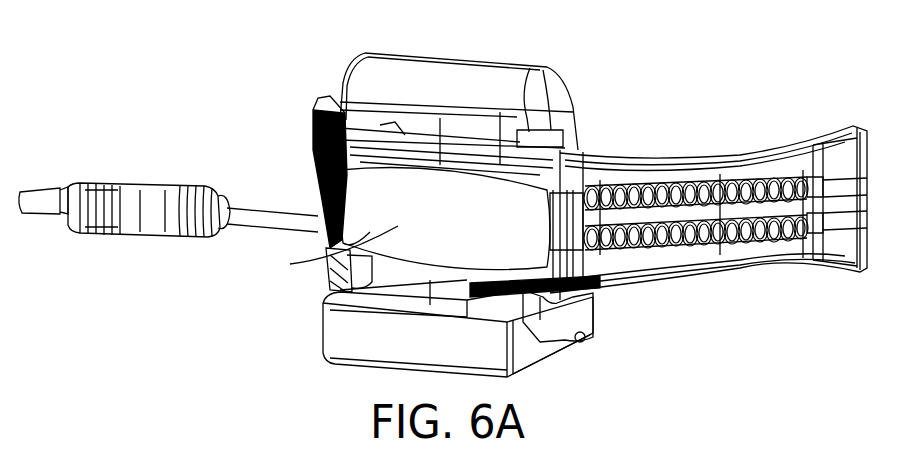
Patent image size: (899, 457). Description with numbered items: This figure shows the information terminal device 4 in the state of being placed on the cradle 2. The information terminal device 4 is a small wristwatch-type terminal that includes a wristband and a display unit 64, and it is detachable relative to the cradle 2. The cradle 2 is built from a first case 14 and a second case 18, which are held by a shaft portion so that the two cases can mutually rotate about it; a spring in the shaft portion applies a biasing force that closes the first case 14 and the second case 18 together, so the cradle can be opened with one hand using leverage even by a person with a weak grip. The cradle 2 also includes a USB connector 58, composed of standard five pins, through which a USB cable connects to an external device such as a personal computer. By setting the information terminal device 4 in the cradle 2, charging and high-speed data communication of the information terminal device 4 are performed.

The cradle 2 is at (583, 84).
The information terminal device 4 is at (298, 186).
The first case 14 is at (376, 79).
The second case 18 is at (353, 342).
The USB connector 58 is at (48, 196).
The display unit 64 is at (330, 260).